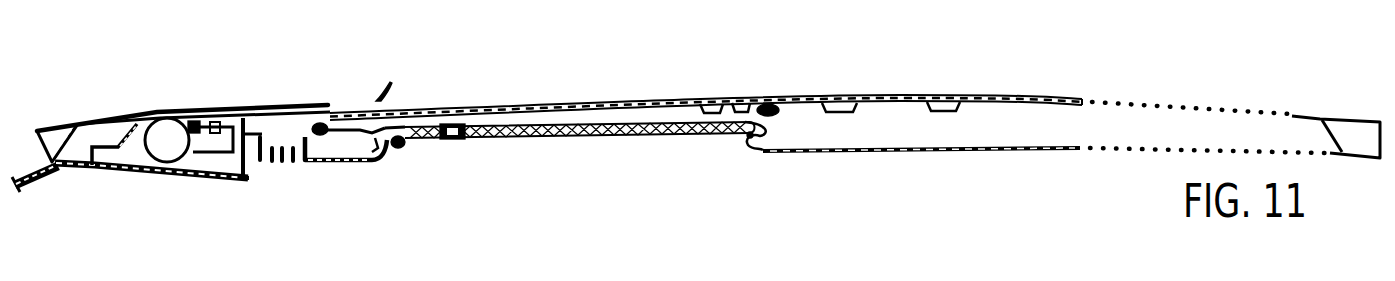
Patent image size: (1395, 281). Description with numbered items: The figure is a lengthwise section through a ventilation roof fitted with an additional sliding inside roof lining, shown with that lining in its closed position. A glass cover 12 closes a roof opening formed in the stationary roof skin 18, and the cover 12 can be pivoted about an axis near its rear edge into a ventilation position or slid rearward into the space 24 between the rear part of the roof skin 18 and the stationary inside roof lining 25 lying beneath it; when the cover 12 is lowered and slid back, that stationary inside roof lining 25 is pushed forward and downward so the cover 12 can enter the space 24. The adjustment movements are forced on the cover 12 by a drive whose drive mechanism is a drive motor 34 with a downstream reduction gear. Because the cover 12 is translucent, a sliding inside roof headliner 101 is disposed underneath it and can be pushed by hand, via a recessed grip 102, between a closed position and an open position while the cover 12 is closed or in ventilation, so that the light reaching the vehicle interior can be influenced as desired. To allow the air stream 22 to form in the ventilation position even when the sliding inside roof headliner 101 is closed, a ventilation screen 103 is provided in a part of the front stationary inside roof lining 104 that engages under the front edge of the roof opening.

The cover 12 is at (568, 106).
The stationary roof skin 18 is at (1176, 100).
The air stream 22 is at (280, 140).
The space 24 is at (1040, 98).
The stationary inside roof lining 25 is at (950, 151).
The drive motor 34 is at (167, 145).
The sliding inside roof headliner 101 is at (583, 138).
The recessed grip 102 is at (450, 139).
The ventilation screen 103 is at (280, 165).
The stationary inside roof lining 104 is at (355, 163).